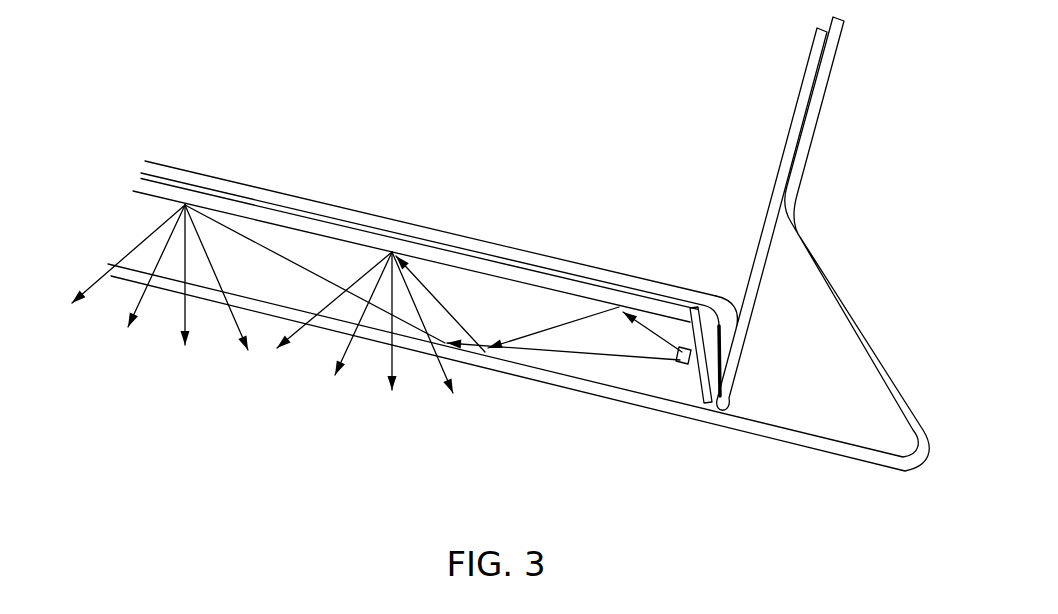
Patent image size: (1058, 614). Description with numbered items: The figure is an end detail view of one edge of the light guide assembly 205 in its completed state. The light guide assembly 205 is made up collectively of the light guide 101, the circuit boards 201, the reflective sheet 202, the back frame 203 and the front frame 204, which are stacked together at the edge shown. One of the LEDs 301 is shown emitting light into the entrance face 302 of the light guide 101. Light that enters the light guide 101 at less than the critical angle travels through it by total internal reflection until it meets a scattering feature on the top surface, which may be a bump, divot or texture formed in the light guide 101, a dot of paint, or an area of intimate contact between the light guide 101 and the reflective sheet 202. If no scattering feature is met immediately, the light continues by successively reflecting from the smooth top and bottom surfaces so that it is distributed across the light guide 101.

The light guide 101 is at (97, 167).
The circuit boards 201 is at (767, 219).
The reflective sheet 202 is at (381, 286).
The back frame 203 is at (430, 229).
The front frame 204 is at (518, 245).
The light guide assembly 205 is at (500, 245).
The LEDs 301 is at (669, 277).
The entrance face 302 is at (700, 424).